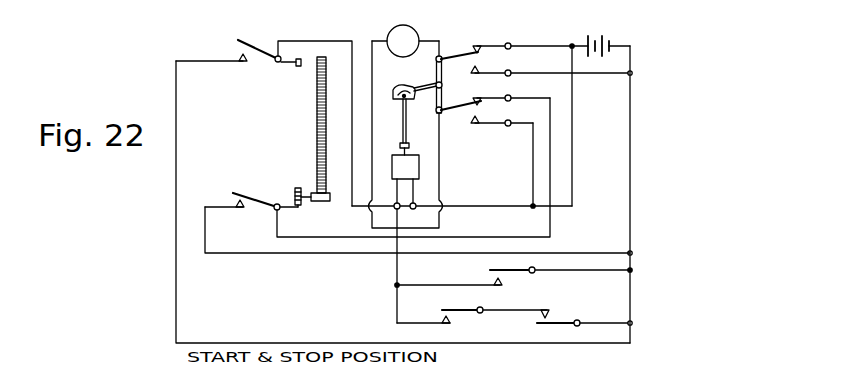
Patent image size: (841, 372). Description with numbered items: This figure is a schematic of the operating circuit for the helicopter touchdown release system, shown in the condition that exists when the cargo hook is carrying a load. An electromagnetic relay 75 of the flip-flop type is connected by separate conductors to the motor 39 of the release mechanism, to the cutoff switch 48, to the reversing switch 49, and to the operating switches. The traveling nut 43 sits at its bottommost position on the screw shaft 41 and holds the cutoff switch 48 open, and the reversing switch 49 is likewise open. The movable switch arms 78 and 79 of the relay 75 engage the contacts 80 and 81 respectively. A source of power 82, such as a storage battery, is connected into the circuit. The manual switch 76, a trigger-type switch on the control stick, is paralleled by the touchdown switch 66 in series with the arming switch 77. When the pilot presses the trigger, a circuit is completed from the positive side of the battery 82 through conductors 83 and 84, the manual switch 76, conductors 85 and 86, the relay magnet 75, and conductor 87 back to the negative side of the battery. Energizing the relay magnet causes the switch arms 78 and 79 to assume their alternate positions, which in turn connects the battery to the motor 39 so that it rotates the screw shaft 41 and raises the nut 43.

The motor 39 is at (391, 31).
The screw shaft 41 is at (314, 109).
The traveling nut 43 is at (300, 188).
The cutoff switch 48 is at (255, 190).
The reversing switch 49 is at (263, 55).
The touchdown switch 66 is at (455, 312).
The electromagnetic relay 75 is at (421, 169).
The manual switch 76 is at (508, 273).
The arming switch 77 is at (523, 309).
The movable switch arm 78 is at (452, 53).
The movable switch arm 79 is at (452, 113).
The contact 80 is at (476, 45).
The contact 81 is at (481, 96).
The source of power 82 is at (615, 32).
The conductor 83 is at (631, 176).
The conductor 84 is at (554, 271).
The conductor 85 is at (458, 262).
The conductor 86 is at (396, 265).
The conductor 87 is at (504, 208).